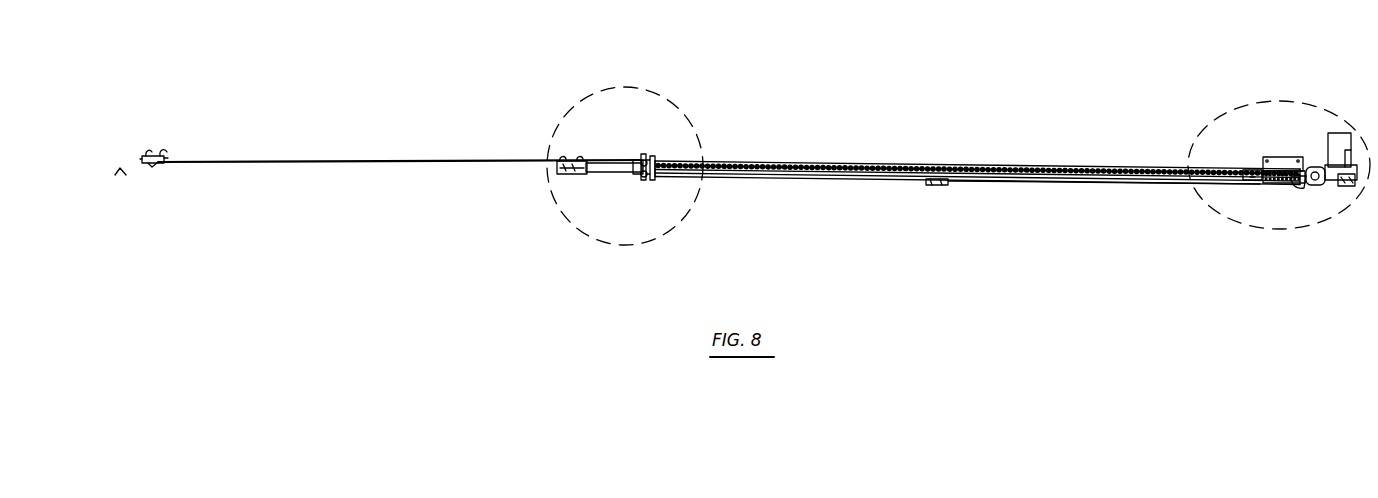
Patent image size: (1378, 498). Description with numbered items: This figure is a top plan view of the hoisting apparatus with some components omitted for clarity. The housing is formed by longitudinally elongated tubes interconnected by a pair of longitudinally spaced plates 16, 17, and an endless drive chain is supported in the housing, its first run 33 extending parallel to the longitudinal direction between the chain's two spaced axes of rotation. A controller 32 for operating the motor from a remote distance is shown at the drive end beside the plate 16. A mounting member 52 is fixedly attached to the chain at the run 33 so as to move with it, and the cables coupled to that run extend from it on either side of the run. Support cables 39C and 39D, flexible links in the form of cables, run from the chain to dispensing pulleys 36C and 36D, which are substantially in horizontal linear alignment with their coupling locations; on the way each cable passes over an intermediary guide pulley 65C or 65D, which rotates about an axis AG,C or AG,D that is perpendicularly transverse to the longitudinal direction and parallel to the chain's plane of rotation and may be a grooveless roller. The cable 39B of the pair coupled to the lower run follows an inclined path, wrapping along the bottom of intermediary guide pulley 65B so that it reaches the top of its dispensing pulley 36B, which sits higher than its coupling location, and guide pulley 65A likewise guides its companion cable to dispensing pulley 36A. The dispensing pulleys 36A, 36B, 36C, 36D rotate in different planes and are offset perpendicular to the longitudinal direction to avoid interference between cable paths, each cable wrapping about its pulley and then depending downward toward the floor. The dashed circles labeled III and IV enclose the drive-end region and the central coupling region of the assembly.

The support cable 39D is at (320, 159).
The dispensing pulley 36D is at (164, 163).
The support cable 39C is at (608, 175).
The dispensing pulley 36C is at (564, 176).
The plate 17 is at (649, 159).
The intermediary guide pulley 65D is at (644, 160).
The intermediary guide pulley 65C is at (645, 177).
The axis of intermediary guide pulley AG,D is at (642, 162).
The axis of intermediary guide pulley AG,C is at (644, 178).
The first run 33 is at (830, 164).
The dispensing pulley 36B is at (936, 186).
The support cable 39B is at (961, 185).
The mounting member 52 is at (1257, 170).
The plate 16 is at (1290, 157).
The controller 32 is at (1332, 146).
The intermediary guide pulley 65A is at (1300, 188).
The intermediary guide pulley 65B is at (1316, 189).
The dispensing pulley 36A is at (1346, 190).
The detail view IV is at (606, 92).
The detail view III is at (1208, 124).